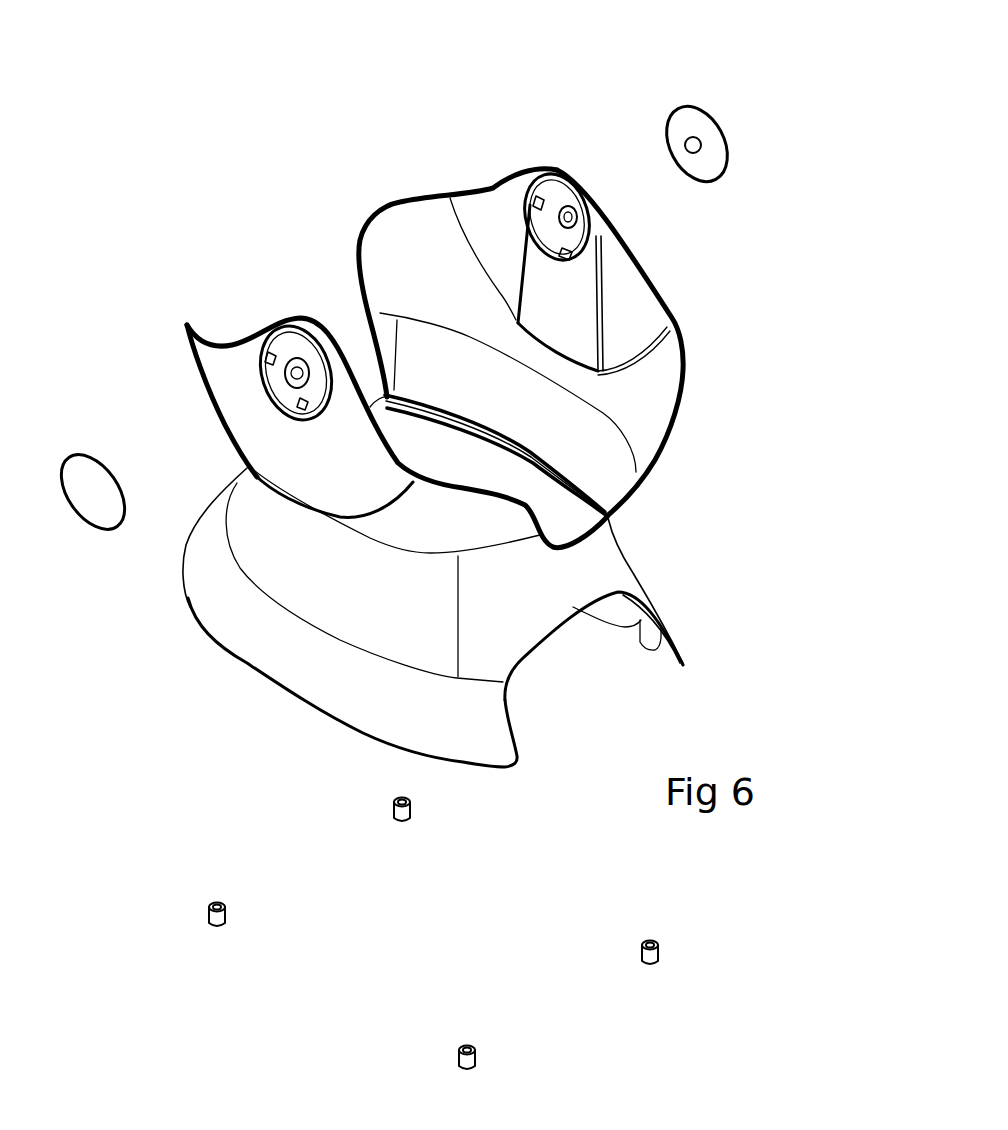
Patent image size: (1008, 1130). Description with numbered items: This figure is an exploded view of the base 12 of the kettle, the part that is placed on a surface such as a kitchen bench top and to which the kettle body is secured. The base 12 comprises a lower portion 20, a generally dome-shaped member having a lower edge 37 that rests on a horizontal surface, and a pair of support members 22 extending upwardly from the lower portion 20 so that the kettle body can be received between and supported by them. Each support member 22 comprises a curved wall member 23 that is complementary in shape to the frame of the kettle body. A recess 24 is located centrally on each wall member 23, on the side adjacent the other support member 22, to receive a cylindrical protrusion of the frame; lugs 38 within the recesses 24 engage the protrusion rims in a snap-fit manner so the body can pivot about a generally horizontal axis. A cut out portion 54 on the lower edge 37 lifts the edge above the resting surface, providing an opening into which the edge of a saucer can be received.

The base 12 is at (246, 116).
The lower portion 20 is at (243, 617).
The support members 22 is at (197, 380).
The curved wall member 23 is at (372, 260).
The recess 24 is at (556, 170).
The lower edge 37 is at (298, 703).
The lugs 38 is at (585, 250).
The cut out portion 54 is at (593, 666).